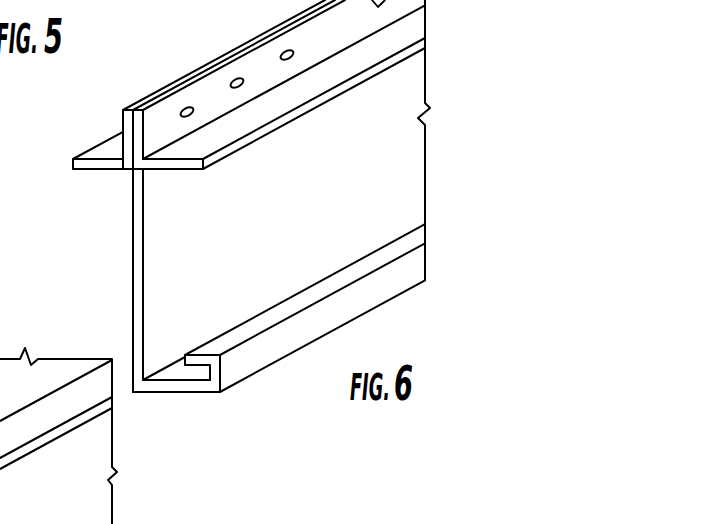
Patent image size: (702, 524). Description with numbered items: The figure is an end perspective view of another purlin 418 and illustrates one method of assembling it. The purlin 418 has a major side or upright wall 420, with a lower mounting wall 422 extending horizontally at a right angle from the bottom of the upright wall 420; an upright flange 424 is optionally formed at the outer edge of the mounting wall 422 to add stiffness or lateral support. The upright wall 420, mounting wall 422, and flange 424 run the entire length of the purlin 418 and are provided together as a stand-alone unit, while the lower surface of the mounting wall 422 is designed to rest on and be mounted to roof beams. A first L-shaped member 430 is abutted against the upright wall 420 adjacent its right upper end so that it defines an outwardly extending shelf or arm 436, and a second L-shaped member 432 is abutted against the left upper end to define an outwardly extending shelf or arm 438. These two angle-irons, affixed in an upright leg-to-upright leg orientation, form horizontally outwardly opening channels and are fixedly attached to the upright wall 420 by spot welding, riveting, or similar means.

The purlin 418 is at (262, 270).
The upright wall 420 is at (145, 253).
The mounting wall 422 is at (165, 393).
The upright flange 424 is at (237, 367).
The first L-shaped member 430 is at (178, 170).
The second L-shaped member 432 is at (120, 170).
The shelf or arm 436 is at (362, 57).
The shelf or arm 438 is at (102, 151).